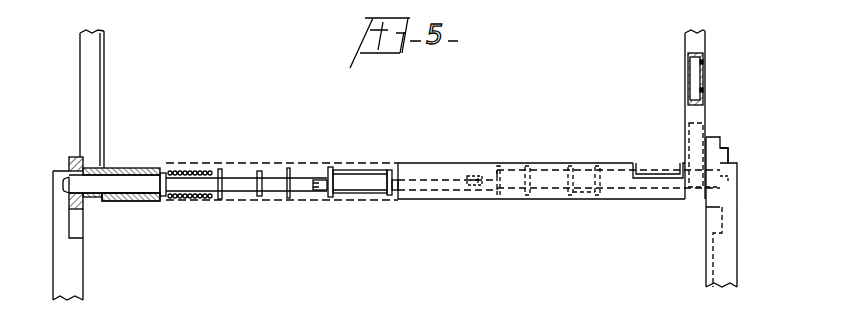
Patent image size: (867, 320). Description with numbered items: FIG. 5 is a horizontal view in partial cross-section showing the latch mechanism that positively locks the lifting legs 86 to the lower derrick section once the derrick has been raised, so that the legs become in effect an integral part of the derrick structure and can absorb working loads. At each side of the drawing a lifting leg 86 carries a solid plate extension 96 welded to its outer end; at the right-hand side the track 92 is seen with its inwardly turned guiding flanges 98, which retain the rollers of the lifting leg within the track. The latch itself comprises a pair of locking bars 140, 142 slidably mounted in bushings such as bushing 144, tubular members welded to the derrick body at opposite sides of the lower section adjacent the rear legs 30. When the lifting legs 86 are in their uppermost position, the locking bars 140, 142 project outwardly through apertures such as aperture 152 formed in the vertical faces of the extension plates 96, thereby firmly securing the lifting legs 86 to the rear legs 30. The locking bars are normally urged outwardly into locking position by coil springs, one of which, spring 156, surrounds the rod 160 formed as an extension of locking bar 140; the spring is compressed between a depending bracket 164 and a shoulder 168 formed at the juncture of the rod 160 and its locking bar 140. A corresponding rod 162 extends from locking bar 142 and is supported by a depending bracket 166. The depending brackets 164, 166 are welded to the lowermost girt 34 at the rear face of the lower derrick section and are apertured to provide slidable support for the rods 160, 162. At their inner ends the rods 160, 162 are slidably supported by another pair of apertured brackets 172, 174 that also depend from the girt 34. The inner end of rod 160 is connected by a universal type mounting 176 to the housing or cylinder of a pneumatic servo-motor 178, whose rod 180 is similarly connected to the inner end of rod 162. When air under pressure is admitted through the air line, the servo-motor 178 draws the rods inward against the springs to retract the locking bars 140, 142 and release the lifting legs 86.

The rear legs 30 is at (652, 140).
The lowermost girt 34 is at (97, 62).
The lifting legs 86 is at (65, 284).
The tracks 92 is at (688, 78).
The plate extension 96 is at (69, 160).
The guiding flanges 98 is at (703, 90).
The locking bar 140 is at (112, 180).
The locking bar 142 is at (730, 183).
The bushing 144 is at (125, 201).
The aperture 152 is at (70, 193).
The coil spring 156 is at (183, 199).
The rod 160 is at (237, 186).
The rod 162 is at (483, 192).
The depending bracket 164 is at (222, 172).
The depending bracket 166 is at (572, 172).
The shoulder 168 is at (161, 185).
The apertured bracket 172 is at (288, 168).
The apertured bracket 174 is at (495, 163).
The universal type mounting 176 is at (312, 197).
The pneumatic servo-motor 178 is at (352, 175).
The rod 180 is at (410, 198).